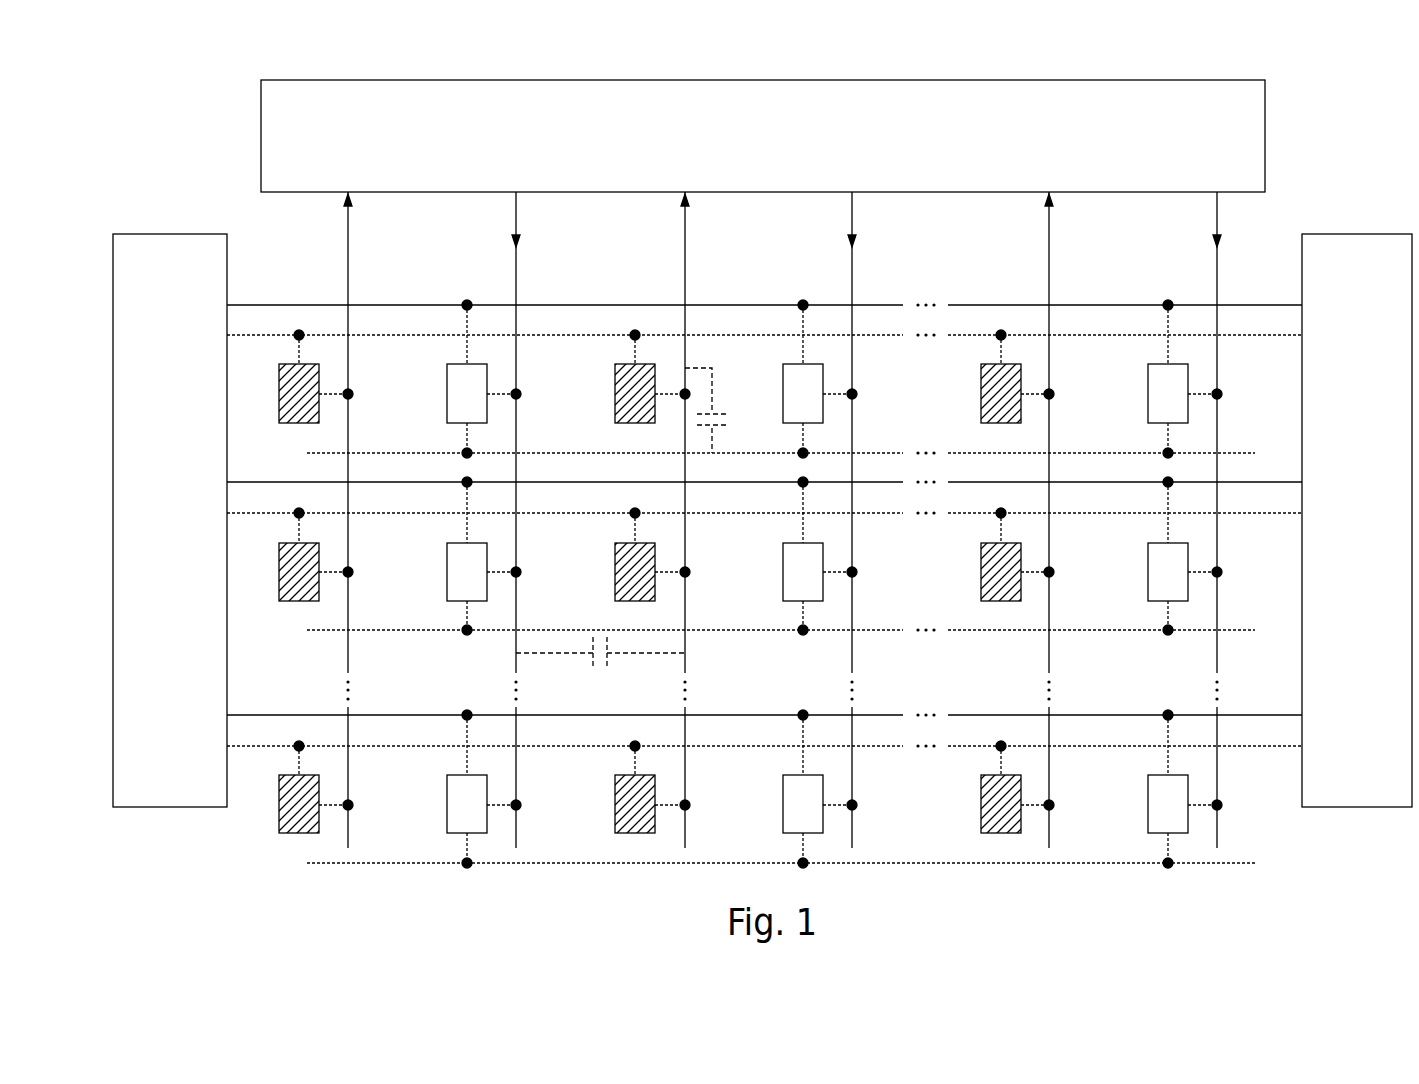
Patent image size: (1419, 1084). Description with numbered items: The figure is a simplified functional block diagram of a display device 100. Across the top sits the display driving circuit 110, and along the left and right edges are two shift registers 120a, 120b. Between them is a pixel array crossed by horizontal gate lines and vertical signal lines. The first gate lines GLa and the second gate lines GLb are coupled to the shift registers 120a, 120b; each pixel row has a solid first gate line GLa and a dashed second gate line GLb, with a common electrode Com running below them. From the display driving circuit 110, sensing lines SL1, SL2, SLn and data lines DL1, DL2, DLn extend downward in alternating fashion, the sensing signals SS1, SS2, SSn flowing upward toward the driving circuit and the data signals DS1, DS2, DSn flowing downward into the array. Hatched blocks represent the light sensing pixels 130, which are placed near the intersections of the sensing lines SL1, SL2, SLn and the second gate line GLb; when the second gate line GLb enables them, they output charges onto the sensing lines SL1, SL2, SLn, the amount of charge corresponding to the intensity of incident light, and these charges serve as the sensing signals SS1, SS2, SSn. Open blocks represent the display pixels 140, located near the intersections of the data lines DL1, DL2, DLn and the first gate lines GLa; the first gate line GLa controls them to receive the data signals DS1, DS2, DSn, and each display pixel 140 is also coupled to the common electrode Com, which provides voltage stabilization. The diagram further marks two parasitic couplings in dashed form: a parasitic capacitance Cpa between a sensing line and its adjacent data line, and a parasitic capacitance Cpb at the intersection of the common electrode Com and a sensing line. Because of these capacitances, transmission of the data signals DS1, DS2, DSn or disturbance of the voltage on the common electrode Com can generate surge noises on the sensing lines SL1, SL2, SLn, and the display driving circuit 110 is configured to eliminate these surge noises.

The display device 100 is at (131, 80).
The display driving circuit 110 is at (261, 111).
The shift register 120a is at (199, 234).
The shift register 120b is at (1383, 234).
The light sensing pixel 130 is at (279, 396).
The display pixel 140 is at (447, 396).
The sensing signal SS1 is at (324, 520).
The sensing signal SS2 is at (661, 520).
The sensing signal SSn is at (1025, 520).
The data signal DS1 is at (491, 520).
The data signal DS2 is at (827, 520).
The data signal DSn is at (1192, 520).
The sensing line SL1 is at (348, 273).
The sensing line SL2 is at (685, 273).
The sensing line SLn is at (1049, 273).
The data line DL1 is at (516, 273).
The data line DL2 is at (852, 273).
The data line DLn is at (1209, 273).
The first gate line GLa is at (1263, 305).
The second gate line GLb is at (1258, 337).
The common electrode Com is at (935, 453).
The parasitic capacitance Cpa is at (730, 410).
The parasitic capacitance Cpb is at (600, 660).